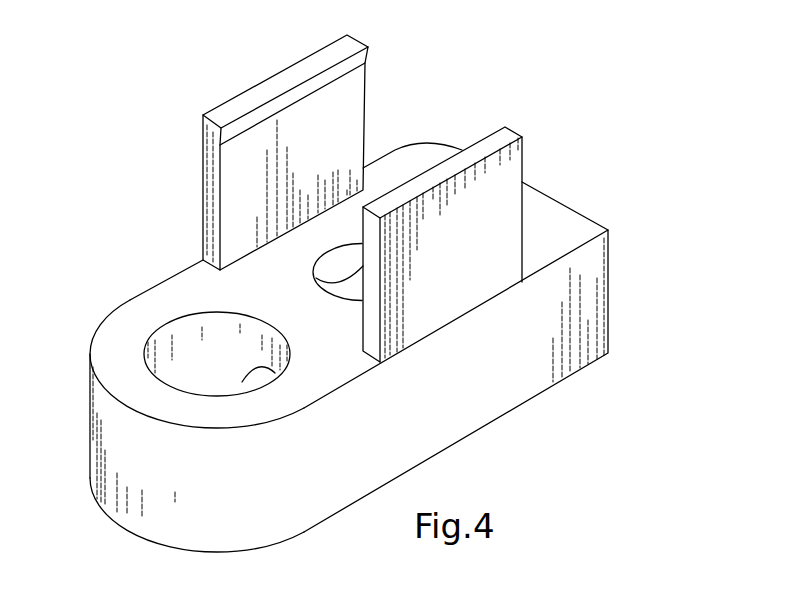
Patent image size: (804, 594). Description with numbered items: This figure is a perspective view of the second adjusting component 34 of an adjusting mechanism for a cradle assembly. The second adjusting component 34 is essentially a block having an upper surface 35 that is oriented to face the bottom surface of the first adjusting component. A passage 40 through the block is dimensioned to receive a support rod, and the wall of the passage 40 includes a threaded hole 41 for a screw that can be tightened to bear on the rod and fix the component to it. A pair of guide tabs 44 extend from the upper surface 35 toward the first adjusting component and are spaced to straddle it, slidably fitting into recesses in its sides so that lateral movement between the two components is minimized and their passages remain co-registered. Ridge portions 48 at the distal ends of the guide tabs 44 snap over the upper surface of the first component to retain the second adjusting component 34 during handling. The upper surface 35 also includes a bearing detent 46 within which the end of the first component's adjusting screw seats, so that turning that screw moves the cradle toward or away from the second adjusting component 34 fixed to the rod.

The second adjusting component 34 is at (349, 450).
The upper surface 35 is at (427, 155).
The passage 40 is at (201, 312).
The threaded hole 41 is at (226, 369).
The guide tabs 44 is at (213, 188).
The bearing detent 46 is at (348, 261).
The ridge portions 48 is at (296, 98).